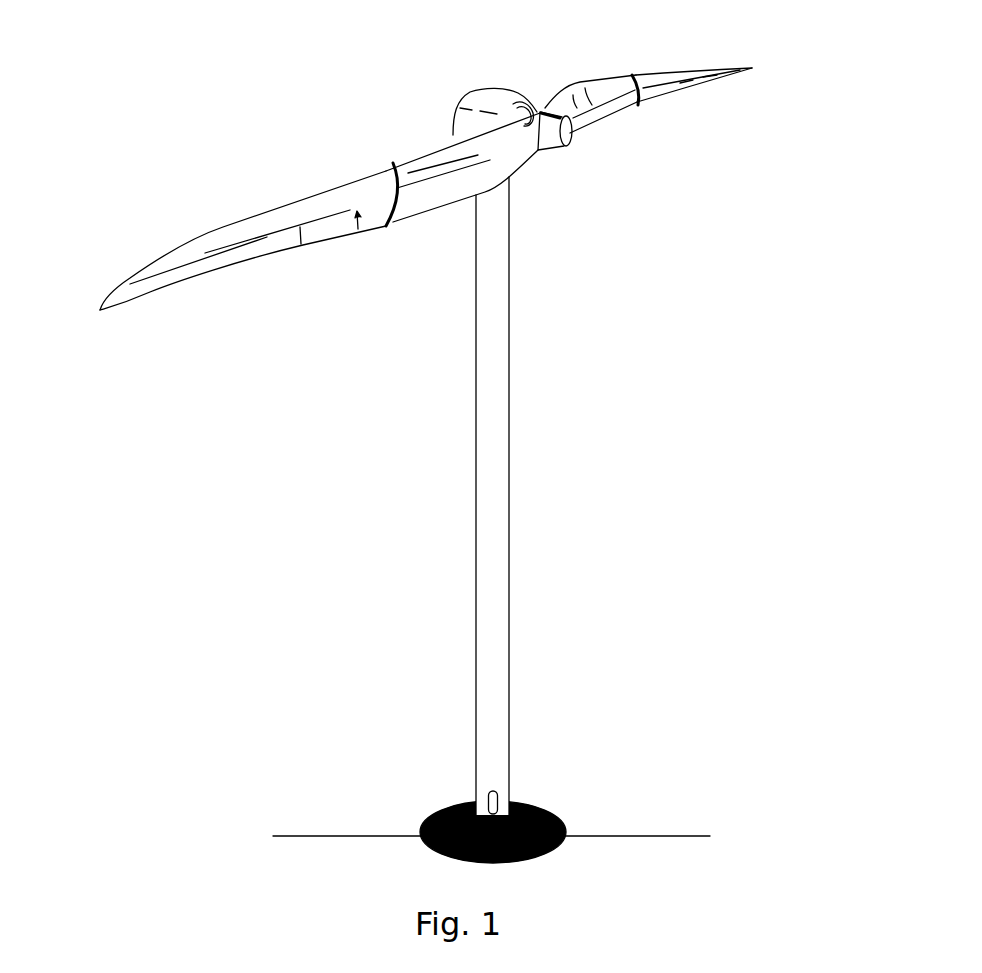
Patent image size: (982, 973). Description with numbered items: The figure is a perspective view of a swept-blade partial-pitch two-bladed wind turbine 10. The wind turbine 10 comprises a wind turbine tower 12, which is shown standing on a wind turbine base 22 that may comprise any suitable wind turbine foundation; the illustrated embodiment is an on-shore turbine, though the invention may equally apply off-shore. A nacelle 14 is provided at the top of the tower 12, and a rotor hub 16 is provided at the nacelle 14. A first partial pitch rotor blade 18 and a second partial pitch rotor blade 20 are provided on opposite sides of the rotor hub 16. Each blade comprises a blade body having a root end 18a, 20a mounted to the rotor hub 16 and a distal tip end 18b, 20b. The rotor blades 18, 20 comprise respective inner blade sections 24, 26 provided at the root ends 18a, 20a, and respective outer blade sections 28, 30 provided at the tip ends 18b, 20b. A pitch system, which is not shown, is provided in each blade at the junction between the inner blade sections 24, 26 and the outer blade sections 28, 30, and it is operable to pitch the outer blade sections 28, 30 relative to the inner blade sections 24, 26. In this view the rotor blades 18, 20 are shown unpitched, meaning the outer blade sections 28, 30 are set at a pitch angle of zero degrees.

The wind turbine 10 is at (460, 434).
The wind turbine tower 12 is at (495, 483).
The nacelle 14 is at (470, 103).
The rotor hub 16 is at (567, 148).
The first partial pitch rotor blade 18 is at (314, 250).
The root end 18a is at (447, 169).
The tip end 18b is at (220, 290).
The second partial pitch rotor blade 20 is at (697, 141).
The root end 20a is at (606, 104).
The tip end 20b is at (770, 74).
The wind turbine base 22 is at (550, 803).
The inner blade section 24 is at (432, 158).
The inner blade section 26 is at (612, 115).
The outer blade section 28 is at (220, 255).
The outer blade section 30 is at (693, 63).